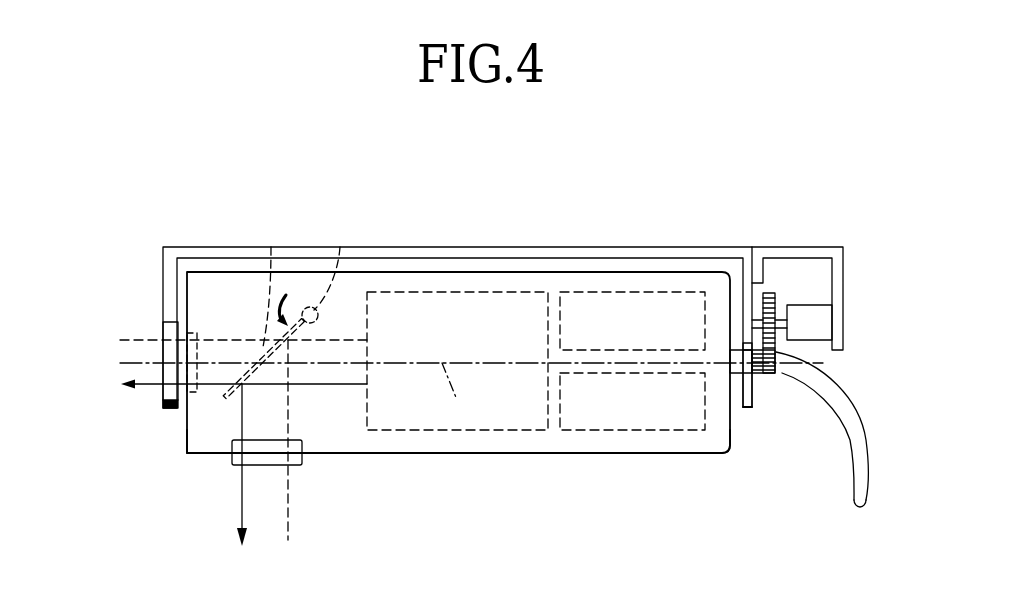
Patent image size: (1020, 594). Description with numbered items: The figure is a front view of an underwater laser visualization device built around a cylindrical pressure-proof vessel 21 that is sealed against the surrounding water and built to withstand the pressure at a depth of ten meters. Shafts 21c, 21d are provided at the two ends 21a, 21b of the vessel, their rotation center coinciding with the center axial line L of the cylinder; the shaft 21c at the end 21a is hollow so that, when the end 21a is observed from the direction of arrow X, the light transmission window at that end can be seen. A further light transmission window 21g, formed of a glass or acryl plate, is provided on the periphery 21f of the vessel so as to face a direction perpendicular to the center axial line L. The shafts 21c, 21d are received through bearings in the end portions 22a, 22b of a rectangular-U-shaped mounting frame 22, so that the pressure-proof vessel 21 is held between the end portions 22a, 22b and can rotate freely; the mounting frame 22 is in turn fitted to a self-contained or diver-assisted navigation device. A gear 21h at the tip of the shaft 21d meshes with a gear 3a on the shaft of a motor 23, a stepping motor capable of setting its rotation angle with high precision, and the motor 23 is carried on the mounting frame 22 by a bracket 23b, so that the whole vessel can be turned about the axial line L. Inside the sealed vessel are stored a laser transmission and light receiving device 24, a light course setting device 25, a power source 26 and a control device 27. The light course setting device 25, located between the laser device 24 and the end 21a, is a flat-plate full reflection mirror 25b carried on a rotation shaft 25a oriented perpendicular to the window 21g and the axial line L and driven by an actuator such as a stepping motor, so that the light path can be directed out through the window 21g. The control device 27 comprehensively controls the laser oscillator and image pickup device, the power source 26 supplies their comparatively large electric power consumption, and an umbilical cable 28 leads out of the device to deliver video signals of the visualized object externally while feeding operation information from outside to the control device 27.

The pressure-proof vessel 21 is at (507, 478).
The end 21a is at (185, 450).
The end 21b is at (733, 452).
The shaft 21c is at (185, 398).
The shaft 21d is at (741, 408).
The periphery 21f is at (414, 454).
The light transmission window 21g is at (270, 467).
The gear 21h is at (766, 376).
The mounting frame 22 is at (438, 247).
The end portion 22a is at (160, 405).
The end portion 22b is at (753, 402).
The motor 23 is at (817, 330).
The bracket 23b is at (843, 287).
The gear 3a is at (770, 293).
The laser transmission and light receiving device 24 is at (491, 290).
The light course setting device 25 is at (295, 335).
The rotation shaft 25a is at (340, 247).
The full reflection mirror 25b is at (263, 361).
The power source 26 is at (635, 290).
The control device 27 is at (637, 430).
The umbilical cable 28 is at (860, 440).
The center axial line L is at (457, 396).
The direction of arrow X is at (84, 363).